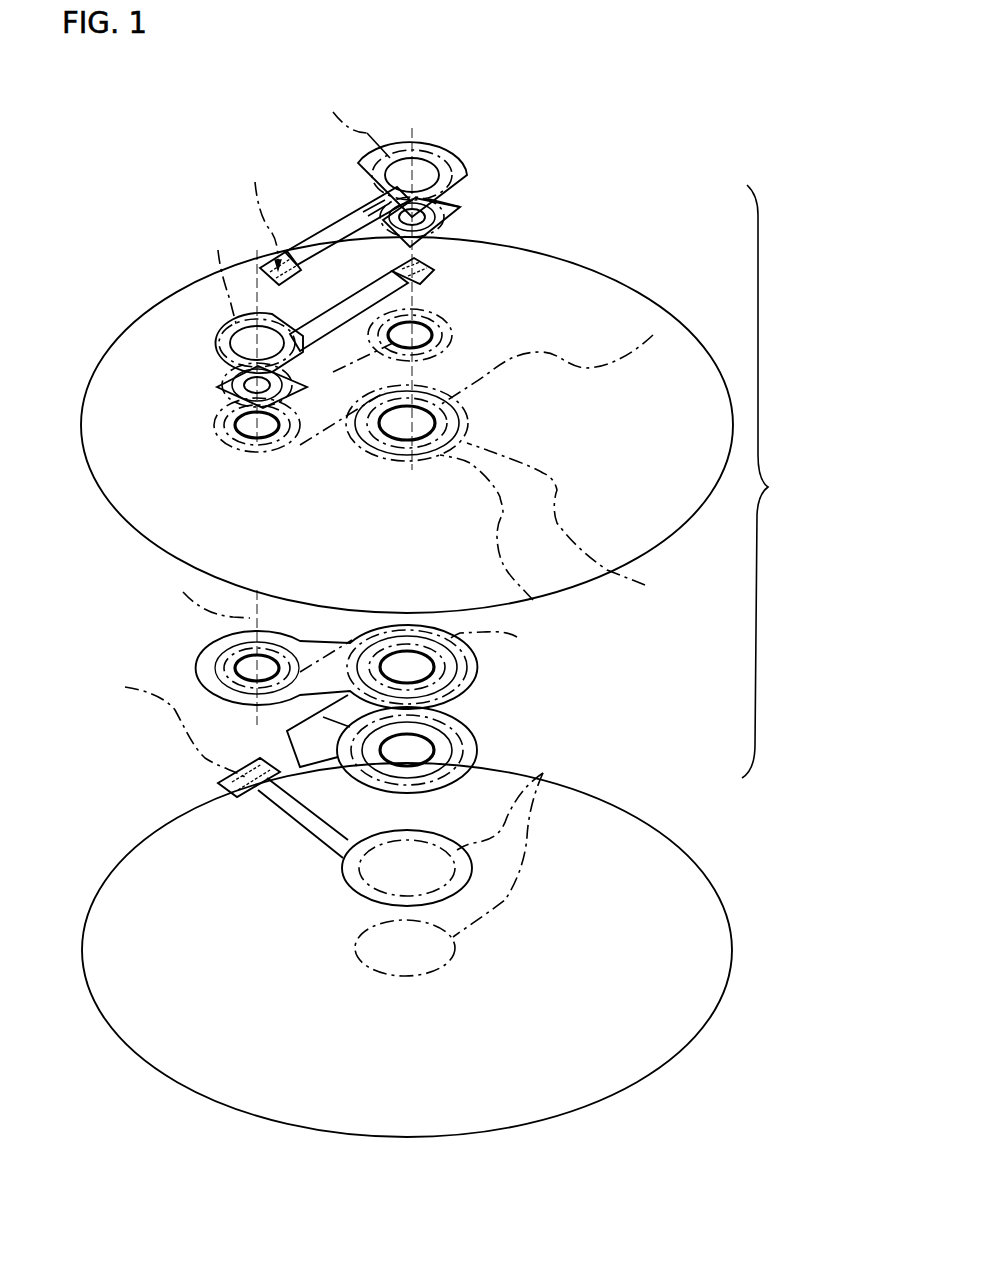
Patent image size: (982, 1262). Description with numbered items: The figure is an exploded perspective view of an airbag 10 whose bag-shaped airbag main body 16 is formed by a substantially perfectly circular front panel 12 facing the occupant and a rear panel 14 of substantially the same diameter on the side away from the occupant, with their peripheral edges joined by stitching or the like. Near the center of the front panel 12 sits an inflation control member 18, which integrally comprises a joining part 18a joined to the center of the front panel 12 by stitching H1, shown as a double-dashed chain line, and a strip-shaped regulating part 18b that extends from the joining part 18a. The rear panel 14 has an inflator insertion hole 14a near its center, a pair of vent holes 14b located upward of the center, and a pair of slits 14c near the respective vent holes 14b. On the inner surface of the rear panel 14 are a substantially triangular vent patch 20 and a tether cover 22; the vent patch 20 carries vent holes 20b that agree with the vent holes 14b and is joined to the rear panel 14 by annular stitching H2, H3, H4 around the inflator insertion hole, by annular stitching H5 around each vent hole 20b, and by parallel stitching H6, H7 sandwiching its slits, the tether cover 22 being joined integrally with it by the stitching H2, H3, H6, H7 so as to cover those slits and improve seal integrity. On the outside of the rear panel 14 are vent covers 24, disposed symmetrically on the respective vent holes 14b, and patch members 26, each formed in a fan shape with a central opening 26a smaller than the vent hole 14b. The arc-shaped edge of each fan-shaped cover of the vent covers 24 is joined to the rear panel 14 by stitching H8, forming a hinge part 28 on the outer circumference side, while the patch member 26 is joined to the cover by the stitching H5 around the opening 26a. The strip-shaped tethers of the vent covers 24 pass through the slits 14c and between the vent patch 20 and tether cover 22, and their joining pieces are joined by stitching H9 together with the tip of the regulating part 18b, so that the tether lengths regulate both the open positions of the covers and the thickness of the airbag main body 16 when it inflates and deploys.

The airbag 10 is at (126, 181).
The front panel 12 is at (676, 833).
The rear panel 14 is at (671, 280).
The inflator insertion hole 14a is at (432, 397).
The vent holes 14b is at (423, 335).
The slits 14c is at (420, 327).
The airbag main body 16 is at (770, 481).
The inflation control member 18 is at (193, 775).
The joining part 18a is at (343, 866).
The regulating part 18b is at (277, 799).
The vent patch 20 is at (177, 658).
The vent holes 20b is at (245, 655).
The tether cover 22 is at (504, 739).
The vent covers 24 is at (482, 151).
The patch member 26 is at (484, 208).
The opening 26a is at (445, 200).
The hinge part 28 is at (392, 138).
The stitching H1 is at (543, 773).
The stitching H2 is at (653, 335).
The stitching H3 is at (645, 585).
The stitching H4 is at (533, 600).
The stitching H5 is at (218, 275).
The stitching H6 is at (208, 590).
The stitching H7 is at (517, 637).
The stitching H8 is at (354, 121).
The stitching H9 is at (189, 466).